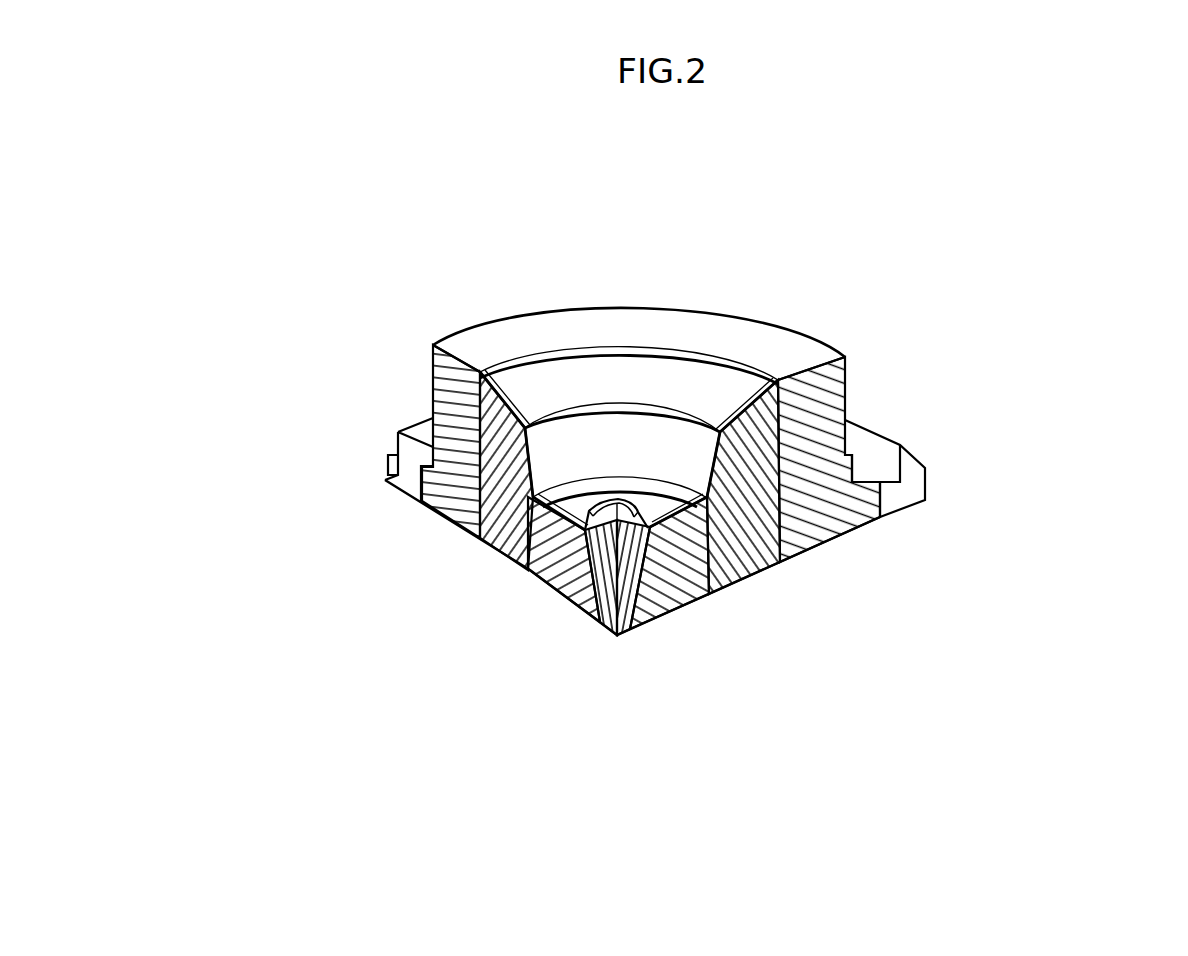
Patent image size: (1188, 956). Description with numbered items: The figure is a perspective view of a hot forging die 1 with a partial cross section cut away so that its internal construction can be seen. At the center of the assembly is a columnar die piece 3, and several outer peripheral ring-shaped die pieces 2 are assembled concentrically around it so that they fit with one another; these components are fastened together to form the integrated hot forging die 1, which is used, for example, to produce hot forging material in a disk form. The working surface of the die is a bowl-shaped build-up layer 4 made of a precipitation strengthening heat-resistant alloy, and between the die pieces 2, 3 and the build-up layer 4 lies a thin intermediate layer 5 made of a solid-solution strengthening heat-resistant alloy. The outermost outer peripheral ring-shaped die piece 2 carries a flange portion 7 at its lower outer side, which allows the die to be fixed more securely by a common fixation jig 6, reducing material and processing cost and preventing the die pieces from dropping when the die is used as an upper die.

The hot forging die 1 is at (627, 462).
The outer peripheral ring-shaped die piece 2 is at (843, 357).
The columnar die piece 3 is at (597, 585).
The build-up layer 4 is at (550, 388).
The intermediate layer 5 is at (442, 389).
The fixation jig 6 is at (383, 480).
The flange portion 7 is at (880, 519).